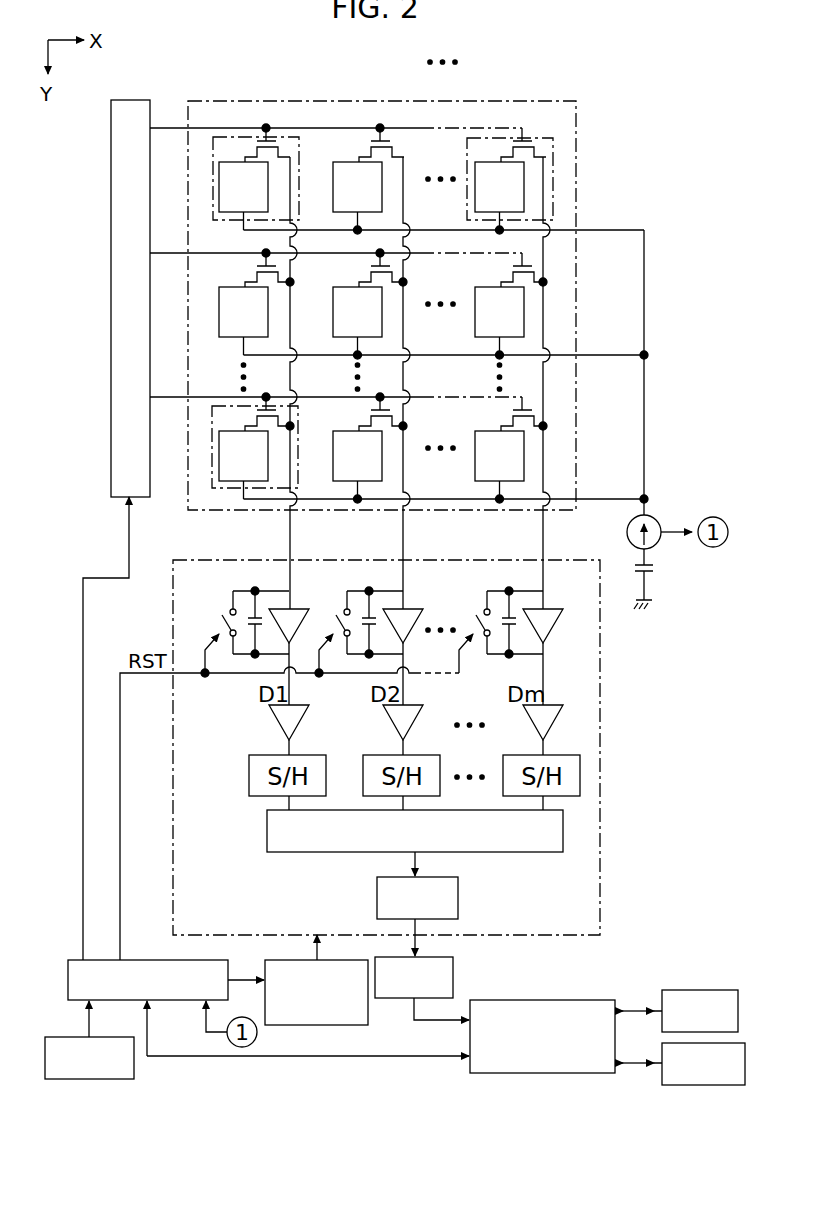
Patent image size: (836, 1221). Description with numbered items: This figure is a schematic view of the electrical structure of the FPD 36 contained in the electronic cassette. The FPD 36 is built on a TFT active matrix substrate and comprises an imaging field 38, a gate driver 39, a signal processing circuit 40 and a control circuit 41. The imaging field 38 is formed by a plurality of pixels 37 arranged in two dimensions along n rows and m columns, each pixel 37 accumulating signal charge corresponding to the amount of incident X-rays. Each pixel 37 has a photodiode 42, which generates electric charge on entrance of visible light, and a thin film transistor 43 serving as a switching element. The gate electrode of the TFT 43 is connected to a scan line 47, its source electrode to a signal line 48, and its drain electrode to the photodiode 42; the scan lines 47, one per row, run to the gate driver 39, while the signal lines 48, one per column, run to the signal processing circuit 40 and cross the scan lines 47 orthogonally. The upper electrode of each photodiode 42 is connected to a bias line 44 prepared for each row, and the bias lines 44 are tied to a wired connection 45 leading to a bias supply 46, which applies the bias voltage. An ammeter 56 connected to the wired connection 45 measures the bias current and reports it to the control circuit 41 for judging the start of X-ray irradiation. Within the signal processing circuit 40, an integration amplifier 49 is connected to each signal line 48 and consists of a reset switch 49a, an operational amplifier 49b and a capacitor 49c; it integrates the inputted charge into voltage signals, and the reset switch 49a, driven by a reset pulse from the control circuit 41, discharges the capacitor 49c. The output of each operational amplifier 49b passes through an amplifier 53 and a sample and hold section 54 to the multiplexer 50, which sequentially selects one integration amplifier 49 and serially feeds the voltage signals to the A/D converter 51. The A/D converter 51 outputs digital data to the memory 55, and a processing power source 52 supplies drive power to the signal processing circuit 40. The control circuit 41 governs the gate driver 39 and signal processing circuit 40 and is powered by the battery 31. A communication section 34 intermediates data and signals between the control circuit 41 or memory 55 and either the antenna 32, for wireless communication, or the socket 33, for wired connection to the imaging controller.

The battery 31 is at (74, 1036).
The antenna 32 is at (705, 1086).
The socket 33 is at (702, 989).
The communication section 34 is at (565, 999).
The FPD 36 is at (556, 92).
The pixel 37 is at (282, 136).
The imaging field 38 is at (548, 100).
The gate driver 39 is at (131, 100).
The signal processing circuit 40 is at (601, 845).
The control circuit 41 is at (148, 960).
The photodiode 42 is at (219, 196).
The thin film transistor 43 is at (263, 139).
The bias line 44 is at (603, 232).
The wired connection 45 is at (645, 430).
The bias supply 46 is at (654, 570).
The scan line 47 is at (178, 126).
The signal line 48 is at (289, 536).
The integration amplifier 49 is at (395, 619).
The reset switch 49a is at (233, 592).
The operational amplifier 49b is at (552, 626).
The capacitor 49c is at (502, 604).
The multiplexer 50 is at (267, 832).
The A/D converter 51 is at (459, 898).
The processing power source 52 is at (330, 1026).
The amplifier 53 is at (275, 723).
The sample and hold section 54 is at (249, 777).
The memory 55 is at (454, 975).
The ammeter 56 is at (656, 522).